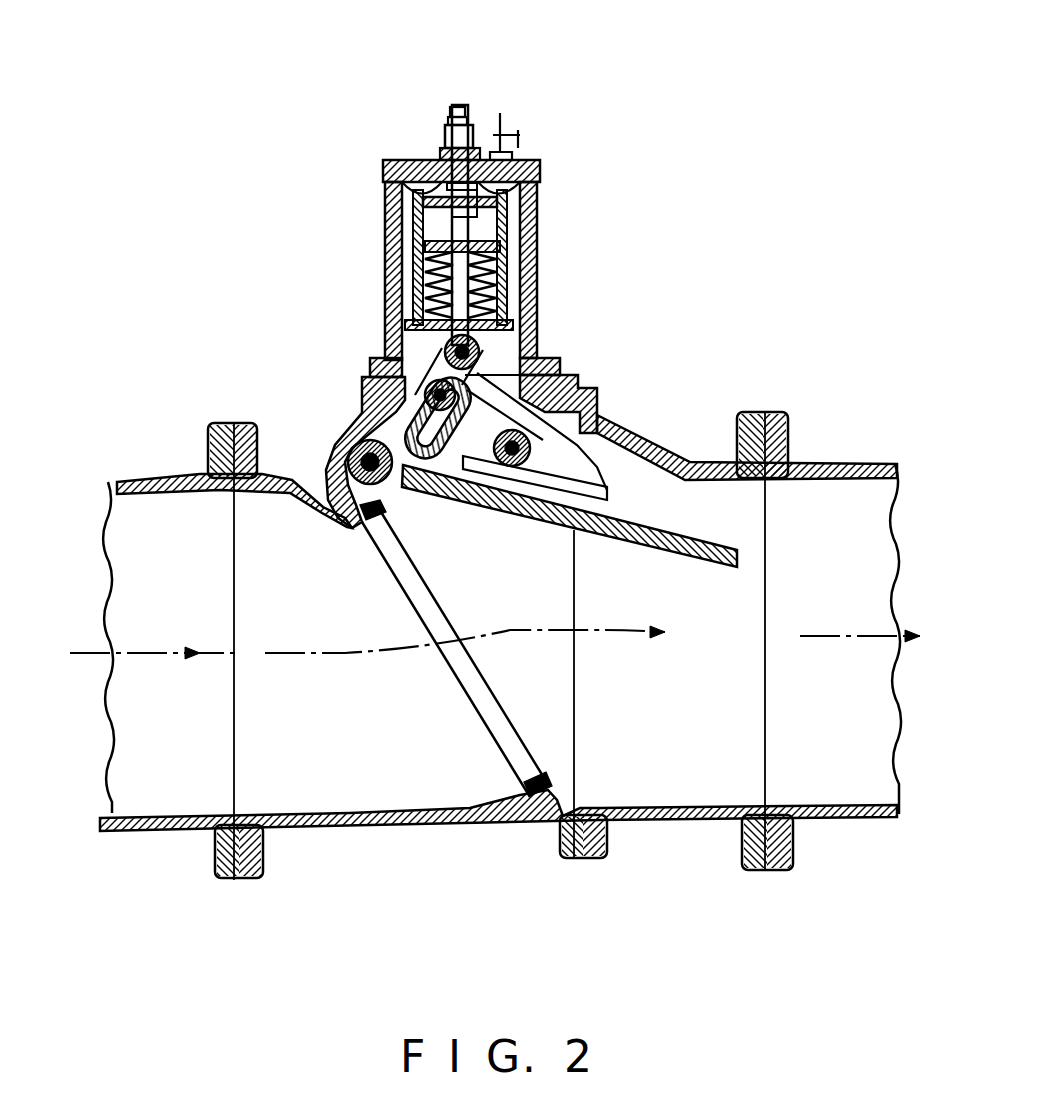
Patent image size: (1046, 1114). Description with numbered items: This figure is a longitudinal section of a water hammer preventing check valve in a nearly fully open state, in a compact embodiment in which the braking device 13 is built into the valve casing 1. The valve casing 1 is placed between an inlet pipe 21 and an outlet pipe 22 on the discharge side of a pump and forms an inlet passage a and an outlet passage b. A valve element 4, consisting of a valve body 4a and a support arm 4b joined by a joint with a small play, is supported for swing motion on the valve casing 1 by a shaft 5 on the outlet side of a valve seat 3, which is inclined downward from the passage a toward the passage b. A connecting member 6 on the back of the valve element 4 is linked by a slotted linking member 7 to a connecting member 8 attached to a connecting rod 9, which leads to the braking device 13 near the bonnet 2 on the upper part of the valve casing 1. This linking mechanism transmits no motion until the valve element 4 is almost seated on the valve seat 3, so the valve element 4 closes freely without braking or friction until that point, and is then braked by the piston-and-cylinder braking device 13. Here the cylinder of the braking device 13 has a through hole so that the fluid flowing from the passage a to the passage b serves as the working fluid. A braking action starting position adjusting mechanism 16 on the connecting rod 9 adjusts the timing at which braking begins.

The valve casing 1 is at (363, 420).
The bonnet 2 is at (390, 357).
The valve seat 3 is at (540, 810).
The valve element 4 is at (578, 456).
The valve body 4a is at (600, 490).
The support arm 4b is at (545, 450).
The shaft 5 is at (333, 453).
The connecting member 6 is at (485, 400).
The linking member 7 is at (535, 322).
The connecting member 8 is at (535, 270).
The connecting rod 9 is at (535, 217).
The braking device 13 is at (392, 250).
The braking action starting position adjusting mechanism 16 is at (470, 123).
The inlet pipe 21 is at (197, 820).
The outlet pipe 22 is at (803, 815).
The inlet passage a is at (300, 633).
The outlet passage b is at (723, 637).